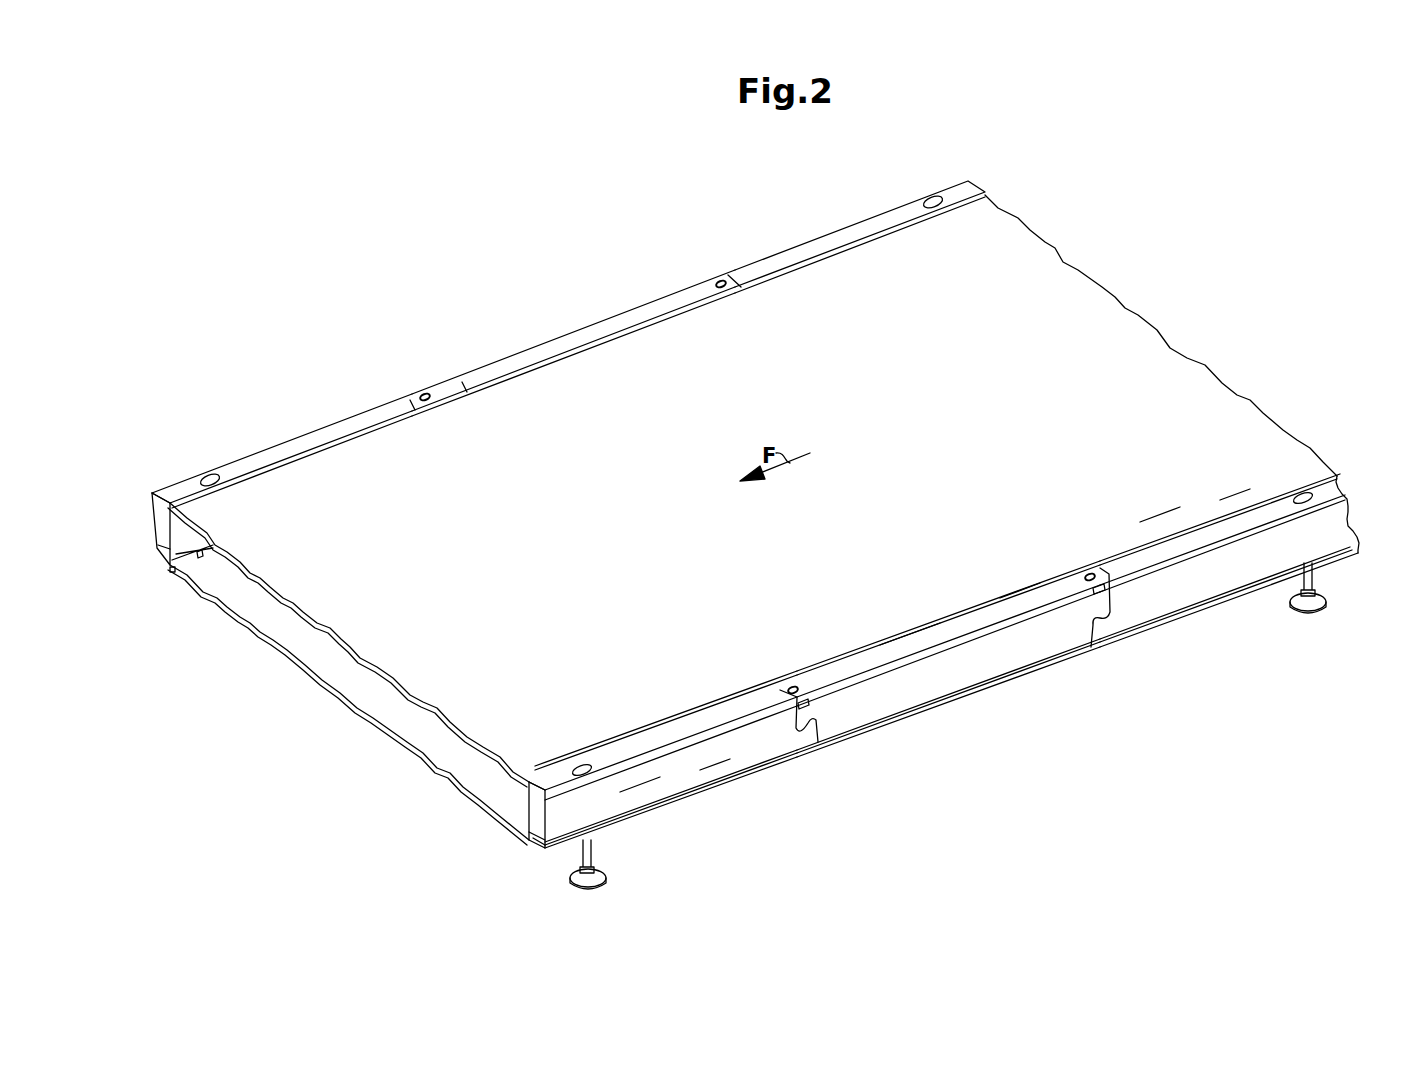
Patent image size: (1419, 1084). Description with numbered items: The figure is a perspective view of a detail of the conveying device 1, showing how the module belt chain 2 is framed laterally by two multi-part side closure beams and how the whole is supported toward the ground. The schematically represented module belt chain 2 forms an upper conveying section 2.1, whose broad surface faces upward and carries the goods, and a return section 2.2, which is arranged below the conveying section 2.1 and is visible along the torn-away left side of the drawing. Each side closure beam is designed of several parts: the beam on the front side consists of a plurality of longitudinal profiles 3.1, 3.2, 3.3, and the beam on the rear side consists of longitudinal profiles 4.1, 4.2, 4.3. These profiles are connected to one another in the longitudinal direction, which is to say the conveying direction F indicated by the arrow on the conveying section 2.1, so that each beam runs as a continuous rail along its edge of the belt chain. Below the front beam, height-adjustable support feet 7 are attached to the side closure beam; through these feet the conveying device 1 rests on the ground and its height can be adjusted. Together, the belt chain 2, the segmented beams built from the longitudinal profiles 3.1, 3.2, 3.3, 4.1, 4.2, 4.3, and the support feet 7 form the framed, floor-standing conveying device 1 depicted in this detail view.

The conveying device 1 is at (613, 278).
The module belt chain 2 is at (1140, 340).
The upper conveying section 2.1 is at (1205, 394).
The return section 2.2 is at (325, 667).
The longitudinal profile 3.1 is at (695, 775).
The longitudinal profile 3.2 is at (955, 680).
The longitudinal profile 3.3 is at (1213, 578).
The longitudinal profile 4.1 is at (291, 445).
The longitudinal profile 4.2 is at (567, 345).
The longitudinal profile 4.3 is at (867, 228).
The height-adjustable support foot 7 is at (565, 882).